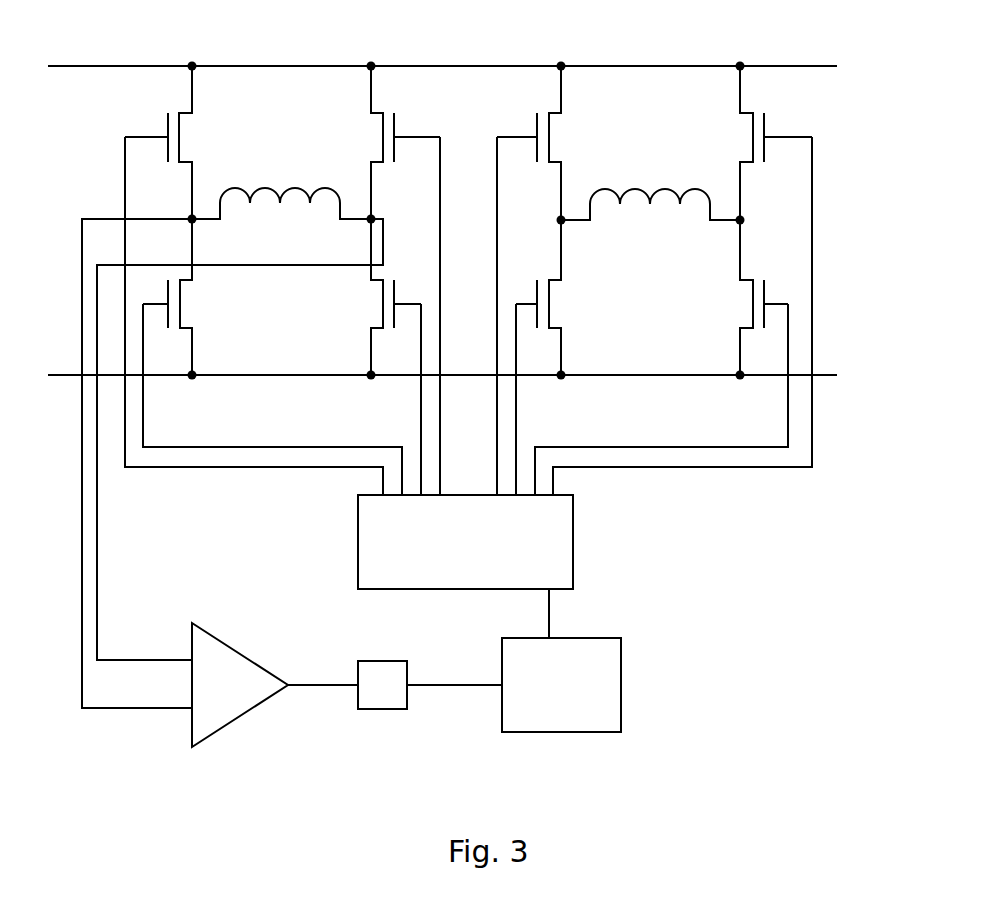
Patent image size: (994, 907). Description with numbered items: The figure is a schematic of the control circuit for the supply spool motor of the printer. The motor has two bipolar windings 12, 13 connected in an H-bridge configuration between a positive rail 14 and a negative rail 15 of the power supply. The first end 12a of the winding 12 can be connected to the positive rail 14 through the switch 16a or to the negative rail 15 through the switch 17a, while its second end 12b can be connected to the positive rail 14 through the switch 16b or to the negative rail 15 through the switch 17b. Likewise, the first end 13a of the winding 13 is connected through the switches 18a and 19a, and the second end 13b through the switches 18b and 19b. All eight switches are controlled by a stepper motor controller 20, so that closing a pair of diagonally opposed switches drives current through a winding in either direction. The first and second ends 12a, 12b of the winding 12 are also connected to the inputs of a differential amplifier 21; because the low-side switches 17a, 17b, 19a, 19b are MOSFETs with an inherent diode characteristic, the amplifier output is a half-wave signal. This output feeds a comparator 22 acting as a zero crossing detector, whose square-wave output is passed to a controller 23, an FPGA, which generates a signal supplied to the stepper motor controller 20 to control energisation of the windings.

The positive rail 14 is at (82, 66).
The negative rail 15 is at (53, 375).
The winding 12 is at (283, 187).
The first end of winding 12a is at (201, 228).
The second end of winding 12b is at (361, 229).
The winding 13 is at (657, 187).
The first end of winding 13a is at (570, 230).
The second end of winding 13b is at (731, 233).
The switch 16a is at (180, 137).
The switch 16b is at (383, 137).
The switch 17a is at (180, 310).
The switch 17b is at (383, 313).
The switch 18a is at (549, 137).
The switch 18b is at (753, 137).
The switch 19a is at (549, 311).
The switch 19b is at (753, 313).
The stepper motor controller 20 is at (573, 548).
The differential amplifier 21 is at (240, 716).
The comparator 22 is at (383, 709).
The controller 23 is at (597, 732).